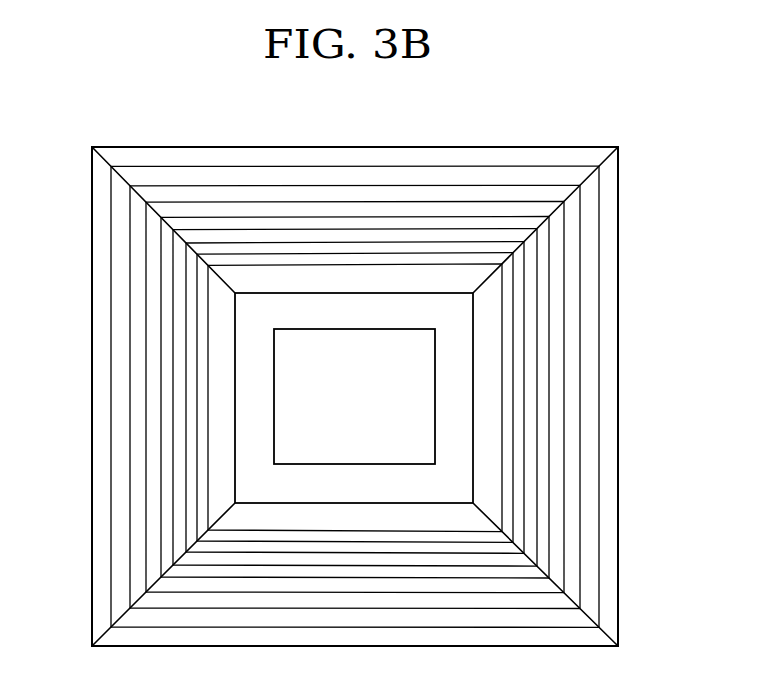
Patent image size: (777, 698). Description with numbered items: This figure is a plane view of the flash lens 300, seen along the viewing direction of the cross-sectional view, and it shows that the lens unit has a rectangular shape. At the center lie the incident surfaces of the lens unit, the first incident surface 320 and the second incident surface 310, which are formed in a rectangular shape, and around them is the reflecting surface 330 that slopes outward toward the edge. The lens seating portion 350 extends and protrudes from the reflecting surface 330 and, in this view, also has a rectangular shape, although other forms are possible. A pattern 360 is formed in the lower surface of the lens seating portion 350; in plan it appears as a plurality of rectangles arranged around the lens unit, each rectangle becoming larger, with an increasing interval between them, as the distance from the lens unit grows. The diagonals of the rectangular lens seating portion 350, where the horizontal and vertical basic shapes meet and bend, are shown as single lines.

The flash lens 300 is at (383, 395).
The second incident surface 310 is at (432, 384).
The first incident surface 320 is at (410, 441).
The reflecting surface 330 is at (487, 336).
The lens seating portion 350 is at (91, 303).
The pattern 360 is at (110, 397).